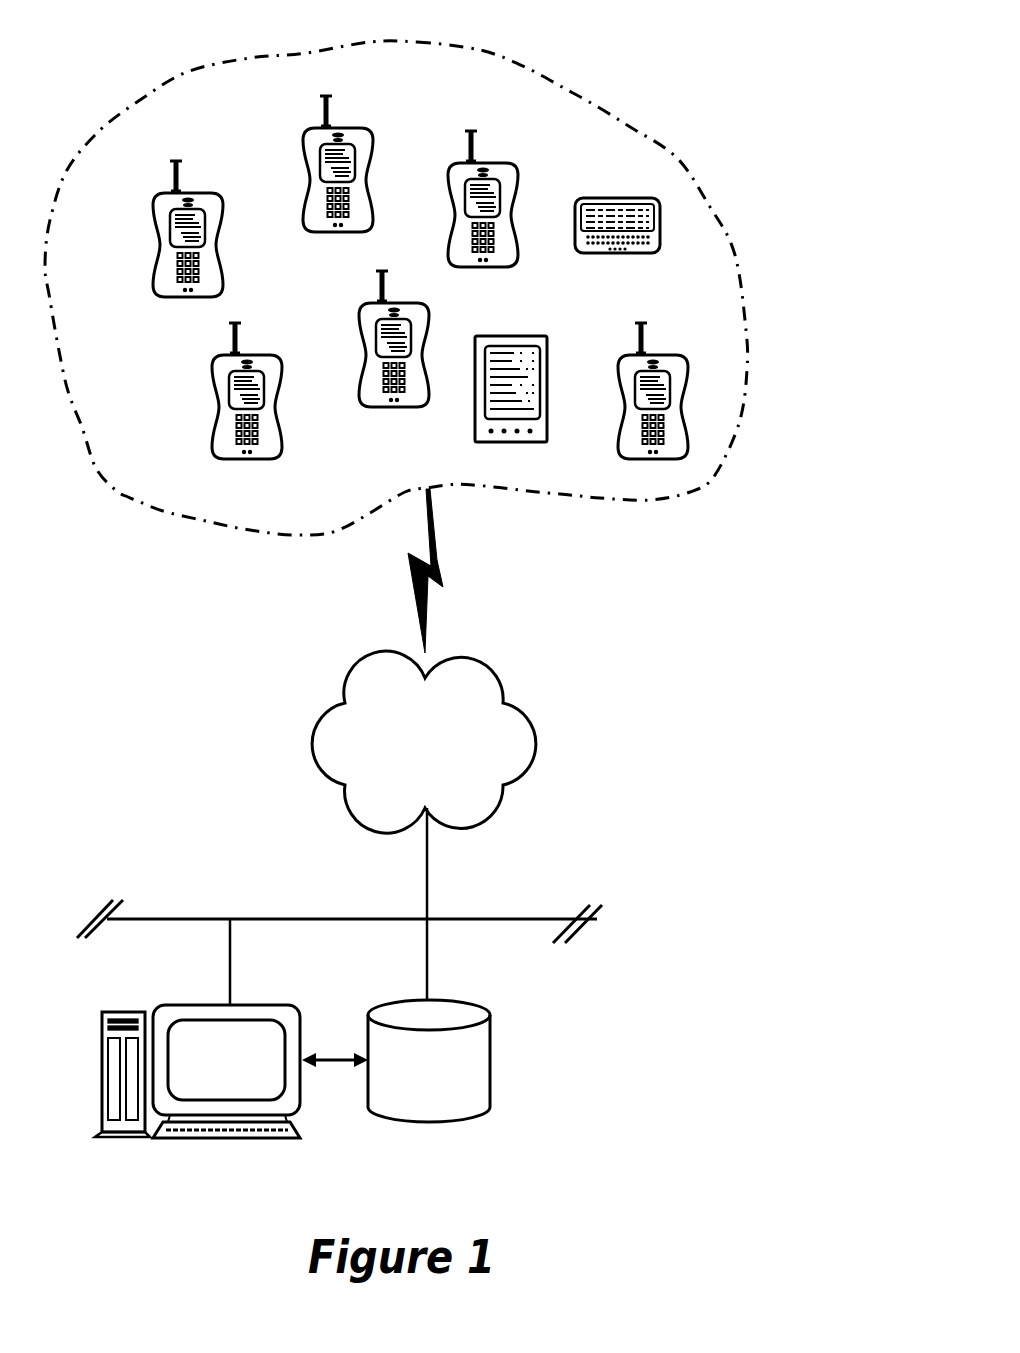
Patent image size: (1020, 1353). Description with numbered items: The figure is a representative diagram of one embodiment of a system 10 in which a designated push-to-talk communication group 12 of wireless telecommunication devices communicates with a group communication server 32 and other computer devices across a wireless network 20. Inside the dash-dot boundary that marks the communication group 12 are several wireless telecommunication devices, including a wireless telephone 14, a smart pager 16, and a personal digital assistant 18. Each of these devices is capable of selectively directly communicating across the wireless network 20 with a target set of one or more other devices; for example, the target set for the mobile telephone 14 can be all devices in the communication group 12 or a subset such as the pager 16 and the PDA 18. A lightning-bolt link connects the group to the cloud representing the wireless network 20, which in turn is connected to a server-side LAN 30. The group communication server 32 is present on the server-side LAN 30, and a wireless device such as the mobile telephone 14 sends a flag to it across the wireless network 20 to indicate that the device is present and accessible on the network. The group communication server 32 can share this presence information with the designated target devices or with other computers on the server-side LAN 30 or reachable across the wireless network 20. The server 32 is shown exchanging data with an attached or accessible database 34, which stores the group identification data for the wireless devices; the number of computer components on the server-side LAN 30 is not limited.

The system 10 is at (681, 62).
The communication group 12 is at (116, 511).
The wireless telephone 14 is at (362, 128).
The smart pager 16 is at (621, 253).
The personal digital assistant 18 is at (484, 412).
The wireless network 20 is at (537, 743).
The server-side LAN 30 is at (193, 919).
The group communication server 32 is at (198, 1004).
The database 34 is at (490, 1061).